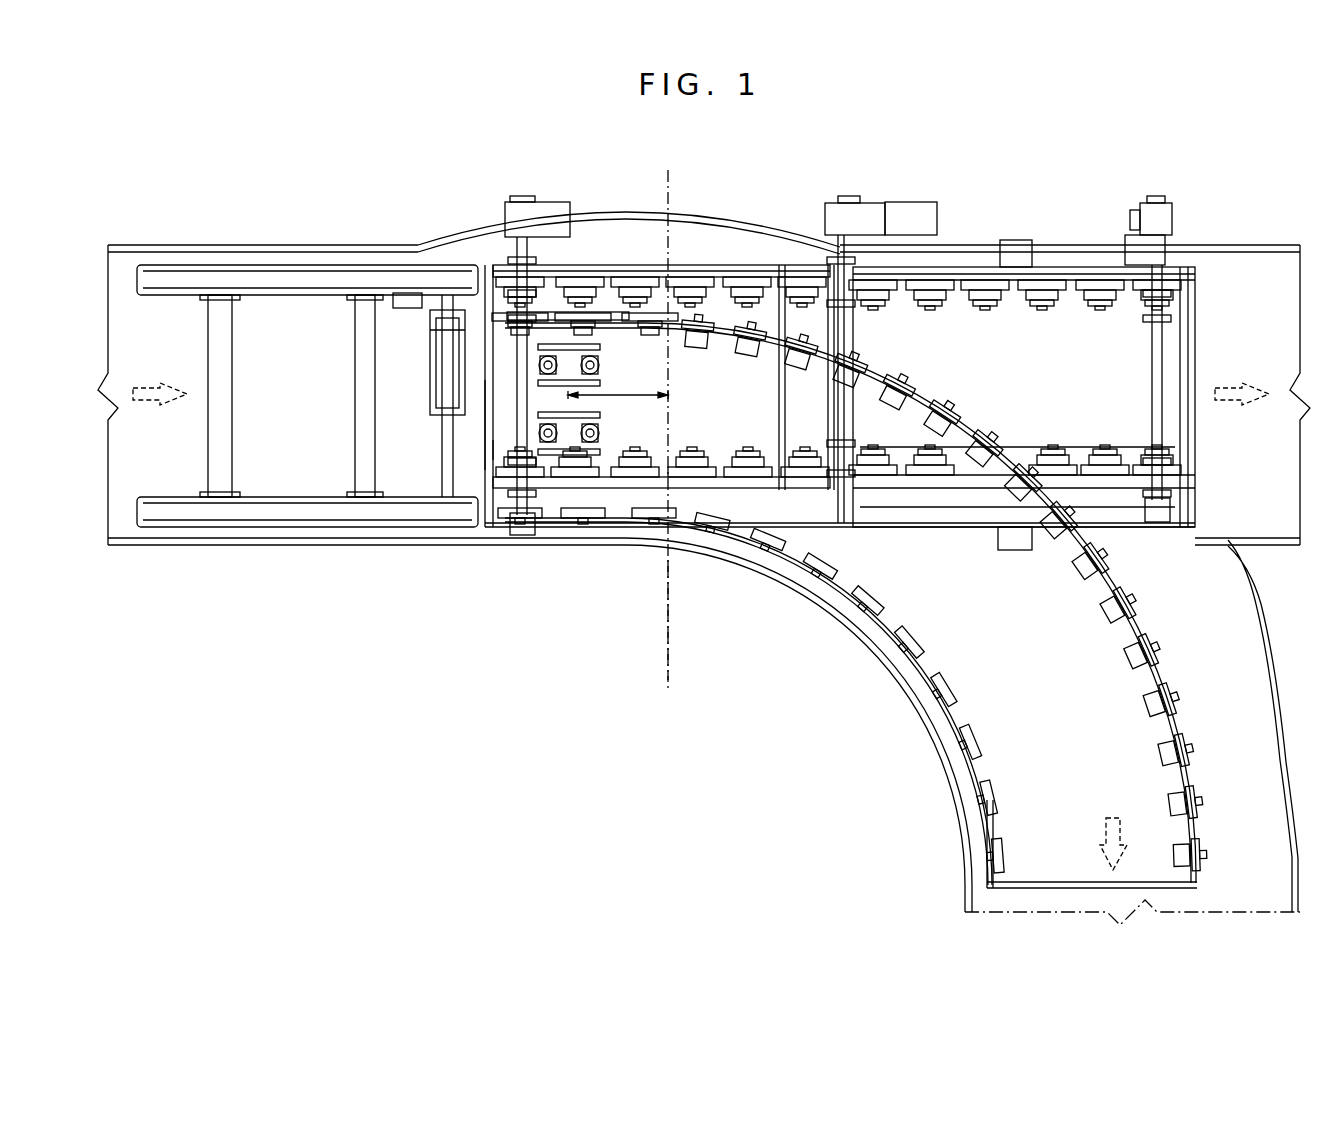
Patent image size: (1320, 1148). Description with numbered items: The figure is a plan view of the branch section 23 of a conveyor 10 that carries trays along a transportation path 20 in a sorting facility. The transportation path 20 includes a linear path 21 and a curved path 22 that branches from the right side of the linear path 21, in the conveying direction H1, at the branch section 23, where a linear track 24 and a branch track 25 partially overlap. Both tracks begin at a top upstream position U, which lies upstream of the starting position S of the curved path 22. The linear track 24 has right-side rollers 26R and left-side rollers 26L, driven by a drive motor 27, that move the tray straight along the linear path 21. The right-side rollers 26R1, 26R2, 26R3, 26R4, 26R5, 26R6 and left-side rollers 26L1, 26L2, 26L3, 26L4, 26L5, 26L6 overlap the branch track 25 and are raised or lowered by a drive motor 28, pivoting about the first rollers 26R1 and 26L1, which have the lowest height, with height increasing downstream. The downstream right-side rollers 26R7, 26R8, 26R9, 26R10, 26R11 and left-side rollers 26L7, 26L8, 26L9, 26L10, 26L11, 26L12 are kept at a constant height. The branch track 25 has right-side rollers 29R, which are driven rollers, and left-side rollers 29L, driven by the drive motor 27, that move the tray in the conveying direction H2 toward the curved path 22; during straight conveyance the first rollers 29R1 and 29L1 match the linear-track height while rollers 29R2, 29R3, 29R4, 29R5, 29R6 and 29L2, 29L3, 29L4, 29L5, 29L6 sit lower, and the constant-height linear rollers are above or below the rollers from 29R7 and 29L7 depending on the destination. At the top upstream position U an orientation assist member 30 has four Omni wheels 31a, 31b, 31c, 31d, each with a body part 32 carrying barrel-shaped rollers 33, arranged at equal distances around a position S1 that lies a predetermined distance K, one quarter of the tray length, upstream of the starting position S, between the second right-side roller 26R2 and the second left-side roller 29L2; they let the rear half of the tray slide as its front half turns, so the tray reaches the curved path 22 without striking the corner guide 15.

The conveyor 10 is at (238, 228).
The corner guide 15 is at (1244, 563).
The transportation path 20 is at (490, 222).
The linear path 21 is at (956, 246).
The curved path 22 is at (946, 772).
The branch section 23 is at (840, 420).
The linear track 24 is at (1176, 289).
The branch track 25 is at (1200, 839).
The left-side rollers 26L is at (642, 264).
The left-side roller 26L1 is at (518, 284).
The left-side roller 26L2 is at (582, 280).
The left-side roller 26L3 is at (636, 280).
The left-side roller 26L4 is at (690, 280).
The left-side roller 26L5 is at (747, 280).
The left-side roller 26L6 is at (803, 280).
The left-side roller 26L7 is at (873, 300).
The left-side roller 26L8 is at (928, 302).
The left-side roller 26L9 is at (986, 302).
The left-side roller 26L10 is at (1040, 302).
The left-side roller 26L11 is at (1100, 302).
The left-side roller 26L12 is at (1165, 300).
The right-side rollers 26R is at (681, 514).
The right-side roller 26R1 is at (518, 486).
The right-side roller 26R2 is at (574, 486).
The right-side roller 26R3 is at (634, 486).
The right-side roller 26R4 is at (692, 486).
The right-side roller 26R5 is at (748, 486).
The right-side roller 26R6 is at (805, 486).
The right-side roller 26R7 is at (875, 488).
The right-side roller 26R8 is at (932, 486).
The right-side roller 26R9 is at (1052, 462).
The right-side roller 26R10 is at (1105, 462).
The right-side roller 26R11 is at (1165, 482).
The drive motor 27 is at (520, 203).
The drive motor 28 is at (880, 214).
The left-side rollers 29L is at (677, 312).
The left-side roller 29L1 is at (518, 318).
The left-side roller 29L2 is at (580, 316).
The left-side roller 29L3 is at (648, 316).
The left-side roller 29L4 is at (705, 326).
The left-side roller 29L5 is at (752, 335).
The left-side roller 29L6 is at (800, 350).
The left-side roller 29L7 is at (895, 400).
The right-side rollers 29R is at (730, 696).
The right-side roller 29R1 is at (520, 522).
The right-side roller 29R2 is at (583, 524).
The right-side roller 29R3 is at (654, 524).
The right-side roller 29R4 is at (713, 532).
The right-side roller 29R5 is at (768, 552).
The right-side roller 29R6 is at (828, 578).
The right-side roller 29R7 is at (880, 612).
The orientation assist member 30 is at (491, 396).
The wheel 31a is at (622, 365).
The wheel 31b is at (440, 380).
The wheel 31c is at (600, 427).
The wheel 31d is at (445, 490).
The body part 32 is at (642, 350).
The barrel-shaped roller 33 is at (600, 360).
The conveying direction H1 is at (150, 398).
The conveying direction H2 is at (1100, 842).
The predetermined distance K is at (670, 396).
The starting position S is at (666, 648).
The position S1 is at (494, 452).
The top upstream position U is at (486, 428).